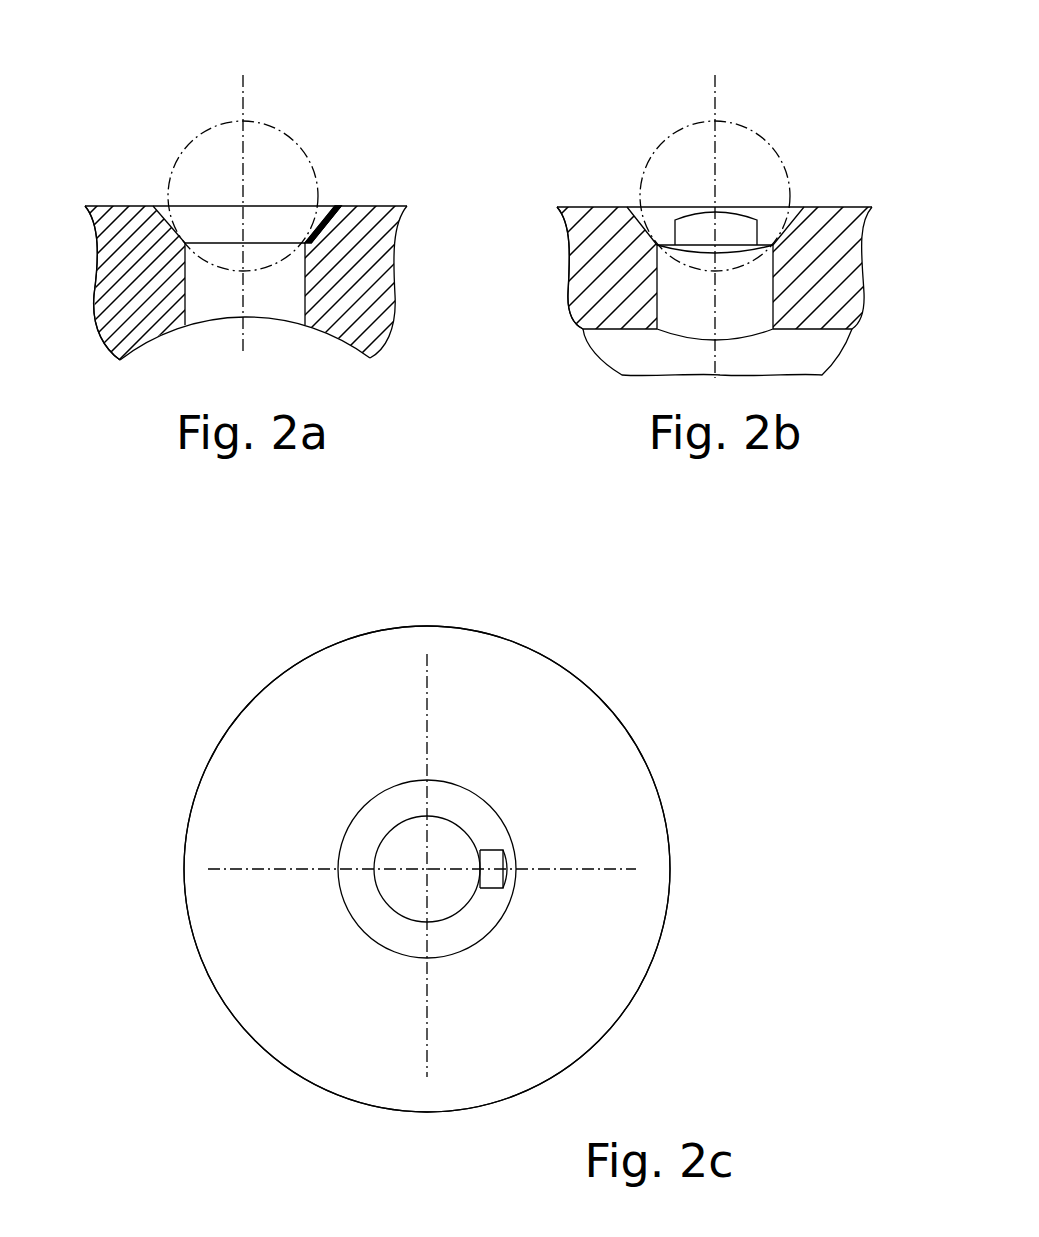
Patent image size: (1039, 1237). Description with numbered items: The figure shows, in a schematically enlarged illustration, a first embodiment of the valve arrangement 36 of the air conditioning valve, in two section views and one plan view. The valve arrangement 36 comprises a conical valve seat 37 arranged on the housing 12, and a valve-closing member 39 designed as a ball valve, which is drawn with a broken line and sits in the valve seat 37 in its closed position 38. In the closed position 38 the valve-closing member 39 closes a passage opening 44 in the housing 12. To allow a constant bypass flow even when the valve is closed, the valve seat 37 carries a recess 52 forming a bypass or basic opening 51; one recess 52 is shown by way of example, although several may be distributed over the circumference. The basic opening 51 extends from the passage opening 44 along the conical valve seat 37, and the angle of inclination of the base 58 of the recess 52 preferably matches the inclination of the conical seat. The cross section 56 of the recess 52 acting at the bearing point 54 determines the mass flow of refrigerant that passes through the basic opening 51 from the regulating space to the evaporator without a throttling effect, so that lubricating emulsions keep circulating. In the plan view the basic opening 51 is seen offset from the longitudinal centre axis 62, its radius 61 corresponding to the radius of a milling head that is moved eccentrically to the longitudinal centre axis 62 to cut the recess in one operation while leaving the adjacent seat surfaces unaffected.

In FIG. 2A, the housing 12 is at (377, 328).
In FIG. 2B, the housing 12 is at (837, 307).
In FIG. 2C, the housing 12 is at (505, 662).
In FIG. 2A, the valve arrangement 36 is at (353, 150).
In FIG. 2B, the valve arrangement 36 is at (824, 150).
In FIG. 2C, the valve arrangement 36 is at (671, 997).
In FIG. 2A, the valve seat 37 is at (132, 212).
In FIG. 2B, the valve seat 37 is at (607, 220).
In FIG. 2C, the valve seat 37 is at (502, 790).
In FIG. 2A, the closed position 38 is at (162, 239).
In FIG. 2B, the closed position 38 is at (633, 240).
In FIG. 2A, the valve-closing member 39 is at (189, 146).
In FIG. 2B, the valve-closing member 39 is at (660, 146).
In FIG. 2A, the passage opening 44 is at (223, 307).
In FIG. 2B, the passage opening 44 is at (672, 307).
In FIG. 2C, the passage opening 44 is at (407, 843).
In FIG. 2A, the basic opening 51 is at (340, 250).
In FIG. 2B, the basic opening 51 is at (745, 203).
In FIG. 2C, the basic opening 51 is at (470, 856).
In FIG. 2A, the recess 52 is at (318, 228).
In FIG. 2B, the recess 52 is at (693, 229).
In FIG. 2C, the recess 52 is at (494, 886).
In FIG. 2A, the bearing point 54 is at (97, 310).
In FIG. 2B, the bearing point 54 is at (600, 262).
In FIG. 2A, the cross section 56 is at (312, 240).
In FIG. 2A, the base 58 is at (336, 230).
In FIG. 2B, the radius 61 is at (707, 212).
In FIG. 2C, the radius 61 is at (517, 875).
In FIG. 2A, the longitudinal centre axis 62 is at (248, 90).
In FIG. 2B, the longitudinal centre axis 62 is at (720, 90).
In FIG. 2C, the longitudinal centre axis 62 is at (427, 868).